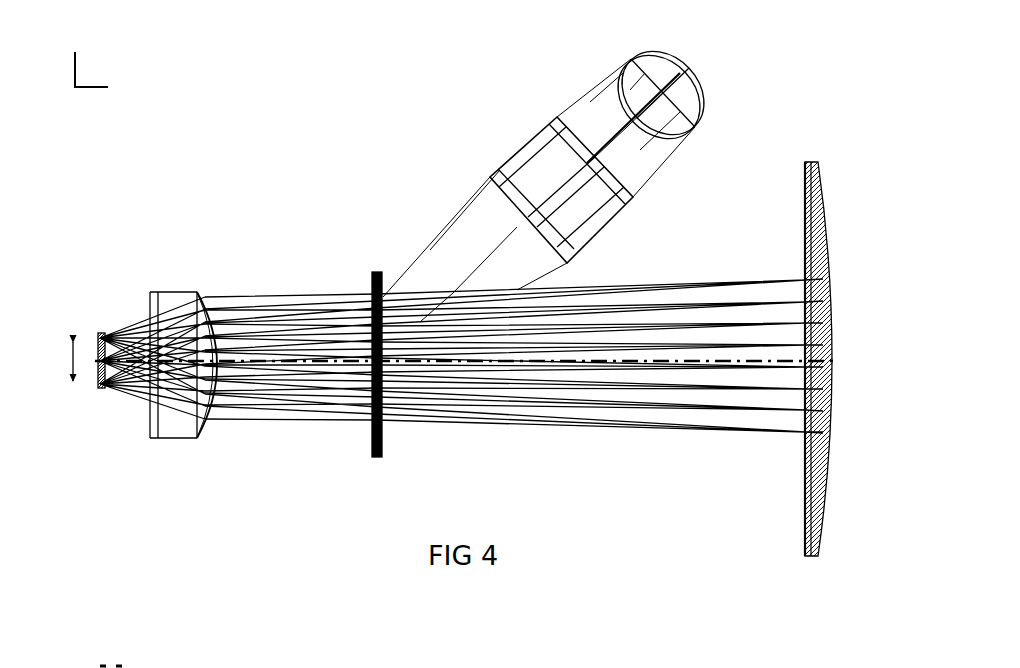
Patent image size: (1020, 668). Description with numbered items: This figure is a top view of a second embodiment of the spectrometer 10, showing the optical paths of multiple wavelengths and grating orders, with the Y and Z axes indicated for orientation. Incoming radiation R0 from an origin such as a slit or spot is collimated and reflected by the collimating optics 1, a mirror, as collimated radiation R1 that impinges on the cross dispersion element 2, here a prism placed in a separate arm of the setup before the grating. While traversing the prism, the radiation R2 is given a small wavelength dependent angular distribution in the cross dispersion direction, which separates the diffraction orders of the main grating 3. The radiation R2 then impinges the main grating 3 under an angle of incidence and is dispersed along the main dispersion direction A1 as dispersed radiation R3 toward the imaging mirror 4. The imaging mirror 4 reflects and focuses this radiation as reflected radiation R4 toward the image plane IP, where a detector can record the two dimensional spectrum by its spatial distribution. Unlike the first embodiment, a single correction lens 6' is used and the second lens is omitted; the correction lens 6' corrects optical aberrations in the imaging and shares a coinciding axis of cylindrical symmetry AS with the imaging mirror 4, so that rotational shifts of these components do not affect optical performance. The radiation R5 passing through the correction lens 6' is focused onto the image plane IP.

The spectrometer 10 is at (229, 92).
The collimating optics 1 is at (697, 68).
The cross dispersion element 2 is at (525, 128).
The main grating 3 is at (372, 257).
The imaging mirror 4 is at (812, 156).
The correction lens 6' is at (173, 312).
The image plane IP is at (100, 322).
The axis of cylindrical symmetry AS is at (839, 354).
The main dispersion direction A1 is at (75, 382).
The incoming radiation R0 is at (642, 157).
The collimated radiation R1 is at (588, 123).
The cross-dispersed radiation R2 is at (507, 268).
The dispersed radiation R3 is at (587, 373).
The reflected radiation R4 is at (300, 373).
The ray segment R5 is at (142, 373).
The Y axis Y is at (87, 58).
The Z axis Z is at (119, 88).